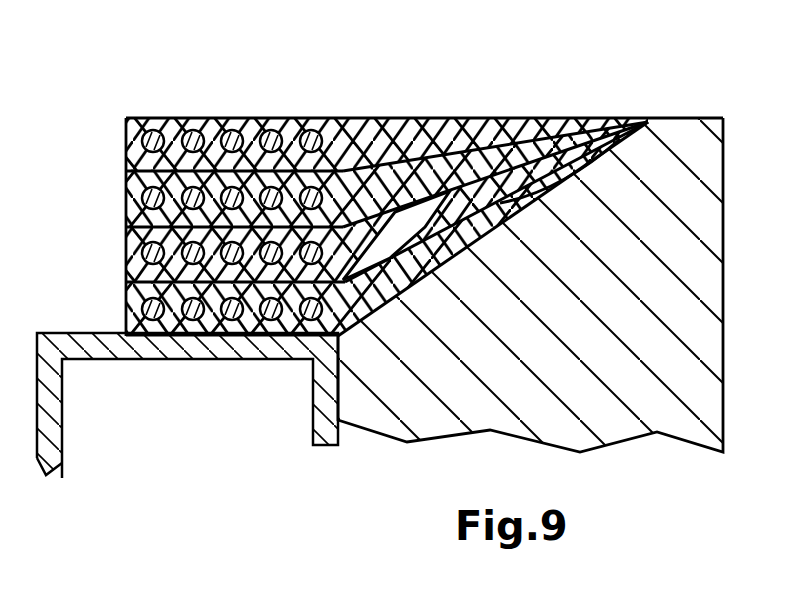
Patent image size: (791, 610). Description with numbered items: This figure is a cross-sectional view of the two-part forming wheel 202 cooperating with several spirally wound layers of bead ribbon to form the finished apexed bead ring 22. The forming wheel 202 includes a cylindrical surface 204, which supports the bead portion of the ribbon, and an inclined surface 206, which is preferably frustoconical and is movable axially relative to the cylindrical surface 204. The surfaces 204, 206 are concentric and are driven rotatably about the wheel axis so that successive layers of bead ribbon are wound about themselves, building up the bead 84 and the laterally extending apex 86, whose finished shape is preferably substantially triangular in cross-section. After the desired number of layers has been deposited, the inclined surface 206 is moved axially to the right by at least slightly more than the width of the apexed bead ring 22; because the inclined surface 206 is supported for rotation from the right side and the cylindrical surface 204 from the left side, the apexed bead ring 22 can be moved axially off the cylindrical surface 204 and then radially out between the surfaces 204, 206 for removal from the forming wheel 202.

The apexed bead ring 22 is at (170, 77).
The bead 84 is at (118, 194).
The apex 86 is at (452, 110).
The inclined surface 206 is at (577, 177).
The cylindrical surface 204 is at (145, 322).
The forming wheel 202 is at (216, 434).